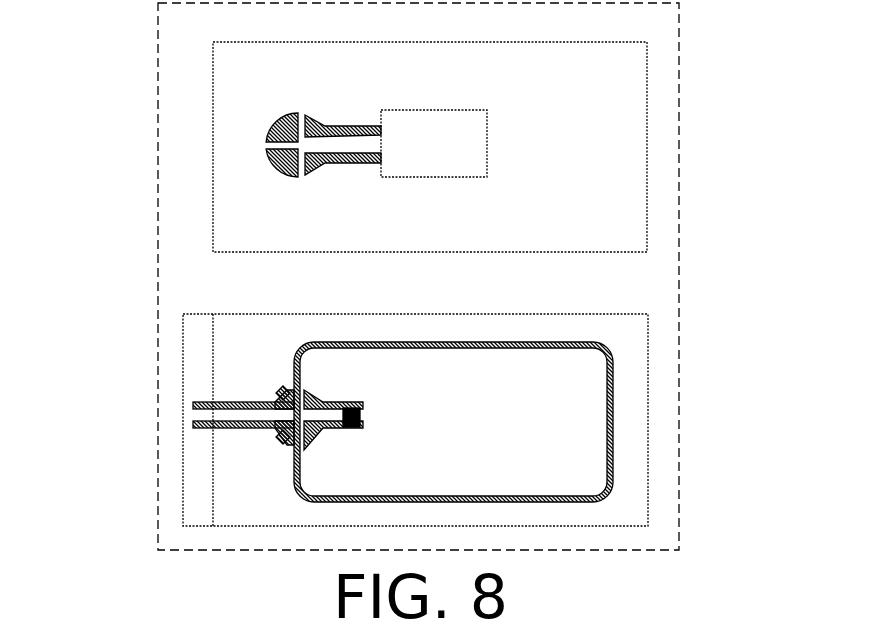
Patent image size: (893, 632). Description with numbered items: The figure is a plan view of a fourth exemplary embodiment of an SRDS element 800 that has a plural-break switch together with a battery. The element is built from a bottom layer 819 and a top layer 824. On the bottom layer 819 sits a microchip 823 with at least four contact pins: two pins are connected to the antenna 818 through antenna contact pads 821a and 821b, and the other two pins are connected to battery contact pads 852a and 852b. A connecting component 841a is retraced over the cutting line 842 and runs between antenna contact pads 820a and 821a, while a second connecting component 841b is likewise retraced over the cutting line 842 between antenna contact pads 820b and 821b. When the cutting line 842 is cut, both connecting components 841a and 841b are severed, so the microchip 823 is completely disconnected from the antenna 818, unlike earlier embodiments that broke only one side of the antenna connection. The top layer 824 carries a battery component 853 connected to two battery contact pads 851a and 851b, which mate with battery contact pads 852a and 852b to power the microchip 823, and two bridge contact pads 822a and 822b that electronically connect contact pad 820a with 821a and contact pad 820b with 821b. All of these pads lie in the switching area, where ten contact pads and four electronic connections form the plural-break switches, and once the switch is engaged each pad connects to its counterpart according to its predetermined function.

The SRDS element 800 is at (133, 68).
The top layer 824 is at (632, 120).
The bridge contact pad 822a is at (280, 113).
The bridge contact pad 822b is at (280, 174).
The battery contact pad 851a is at (317, 125).
The battery contact pad 851b is at (317, 170).
The battery component 853 is at (478, 163).
The bottom layer 819 is at (630, 390).
The cutting line 842 is at (213, 353).
The antenna 818 is at (514, 496).
The connecting component 841b is at (193, 405).
The connecting component 841a is at (193, 425).
The antenna contact pad 820b is at (276, 402).
The antenna contact pad 820a is at (273, 437).
The antenna contact pad 821b is at (285, 390).
The antenna contact pad 821a is at (286, 443).
The battery contact pad 852b is at (316, 398).
The battery contact pad 852a is at (320, 444).
The microchip 823 is at (360, 416).